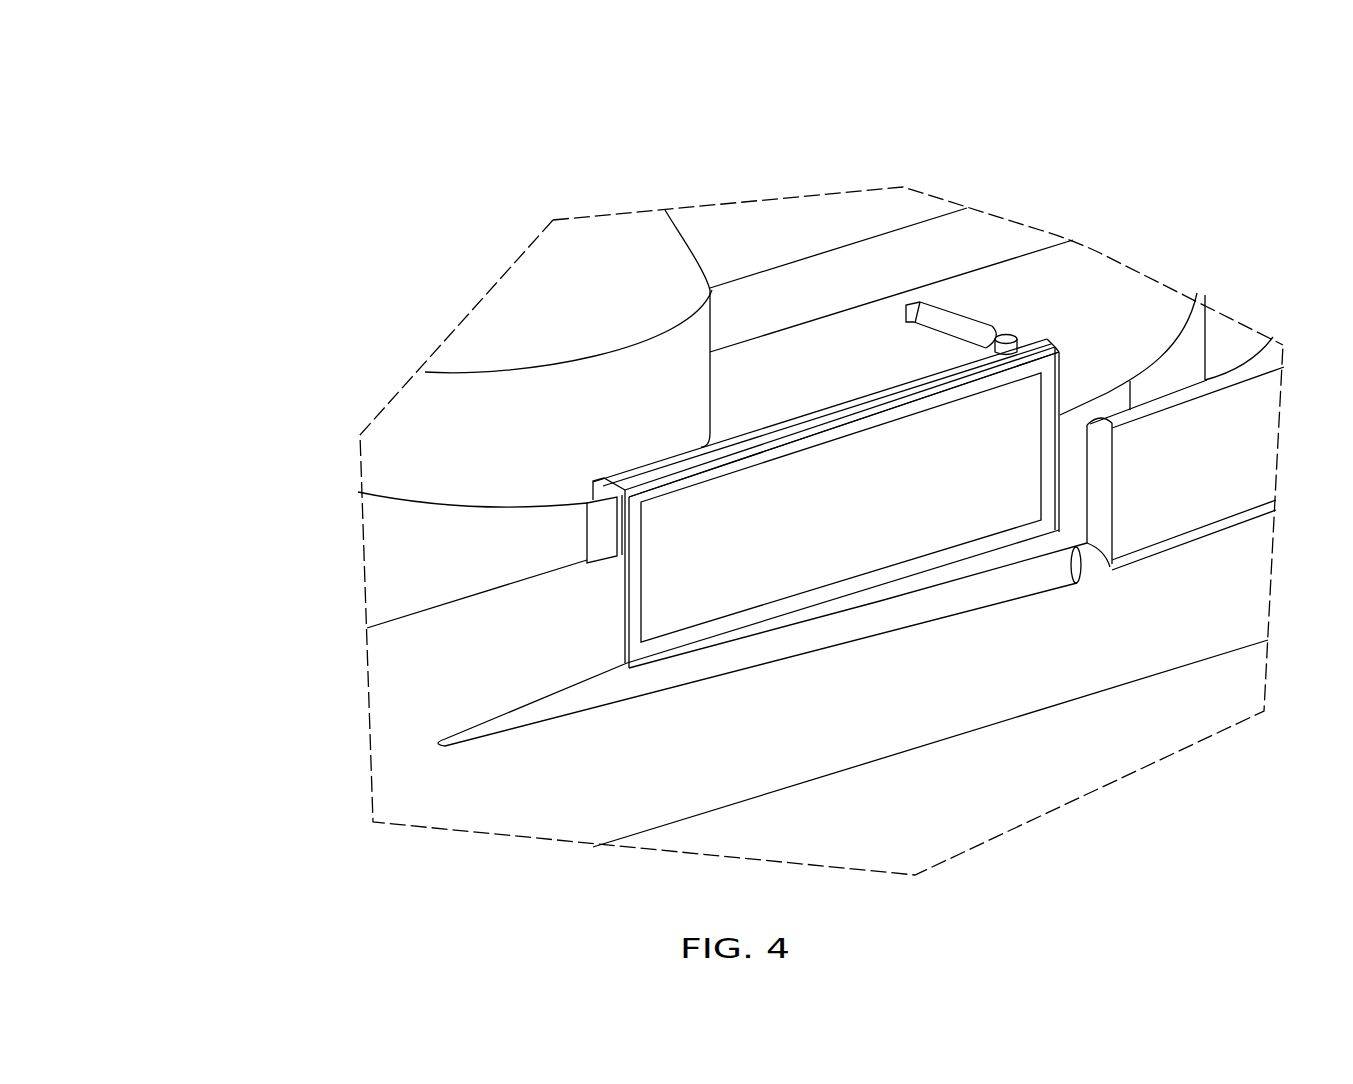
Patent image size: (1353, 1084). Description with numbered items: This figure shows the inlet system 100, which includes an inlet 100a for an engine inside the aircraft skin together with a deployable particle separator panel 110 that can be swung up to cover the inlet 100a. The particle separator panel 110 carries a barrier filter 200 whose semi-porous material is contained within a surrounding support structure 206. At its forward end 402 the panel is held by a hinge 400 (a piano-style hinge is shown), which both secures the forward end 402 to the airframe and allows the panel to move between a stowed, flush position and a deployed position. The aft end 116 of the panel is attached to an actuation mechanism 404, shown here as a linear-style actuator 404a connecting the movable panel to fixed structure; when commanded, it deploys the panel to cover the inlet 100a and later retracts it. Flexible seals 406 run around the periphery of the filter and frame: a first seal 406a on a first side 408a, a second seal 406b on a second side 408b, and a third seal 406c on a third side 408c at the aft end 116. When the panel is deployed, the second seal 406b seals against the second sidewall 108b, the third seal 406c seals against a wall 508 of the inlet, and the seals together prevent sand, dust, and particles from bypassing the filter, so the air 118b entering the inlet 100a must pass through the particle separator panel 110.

The inlet system 100 is at (833, 158).
The inlet 100a is at (1084, 497).
The second sidewall 108b is at (742, 657).
The particle separator panel 110 is at (803, 581).
The barrier filter 200 is at (707, 568).
The support structure 206 is at (850, 585).
The aft end 116 is at (1098, 466).
The air 118b is at (1084, 482).
The hinge 400 is at (371, 490).
The forward end 402 is at (552, 552).
The actuation mechanism 404 is at (1023, 220).
The actuator 404a is at (1010, 330).
The flexible seals 406 is at (782, 430).
The first seal 406a is at (877, 400).
The second seal 406b is at (813, 607).
The third seal 406c is at (1073, 390).
The first side 408a is at (818, 400).
The second side 408b is at (850, 627).
The third side 408c is at (1055, 343).
The wall of the inlet 508 is at (1103, 522).